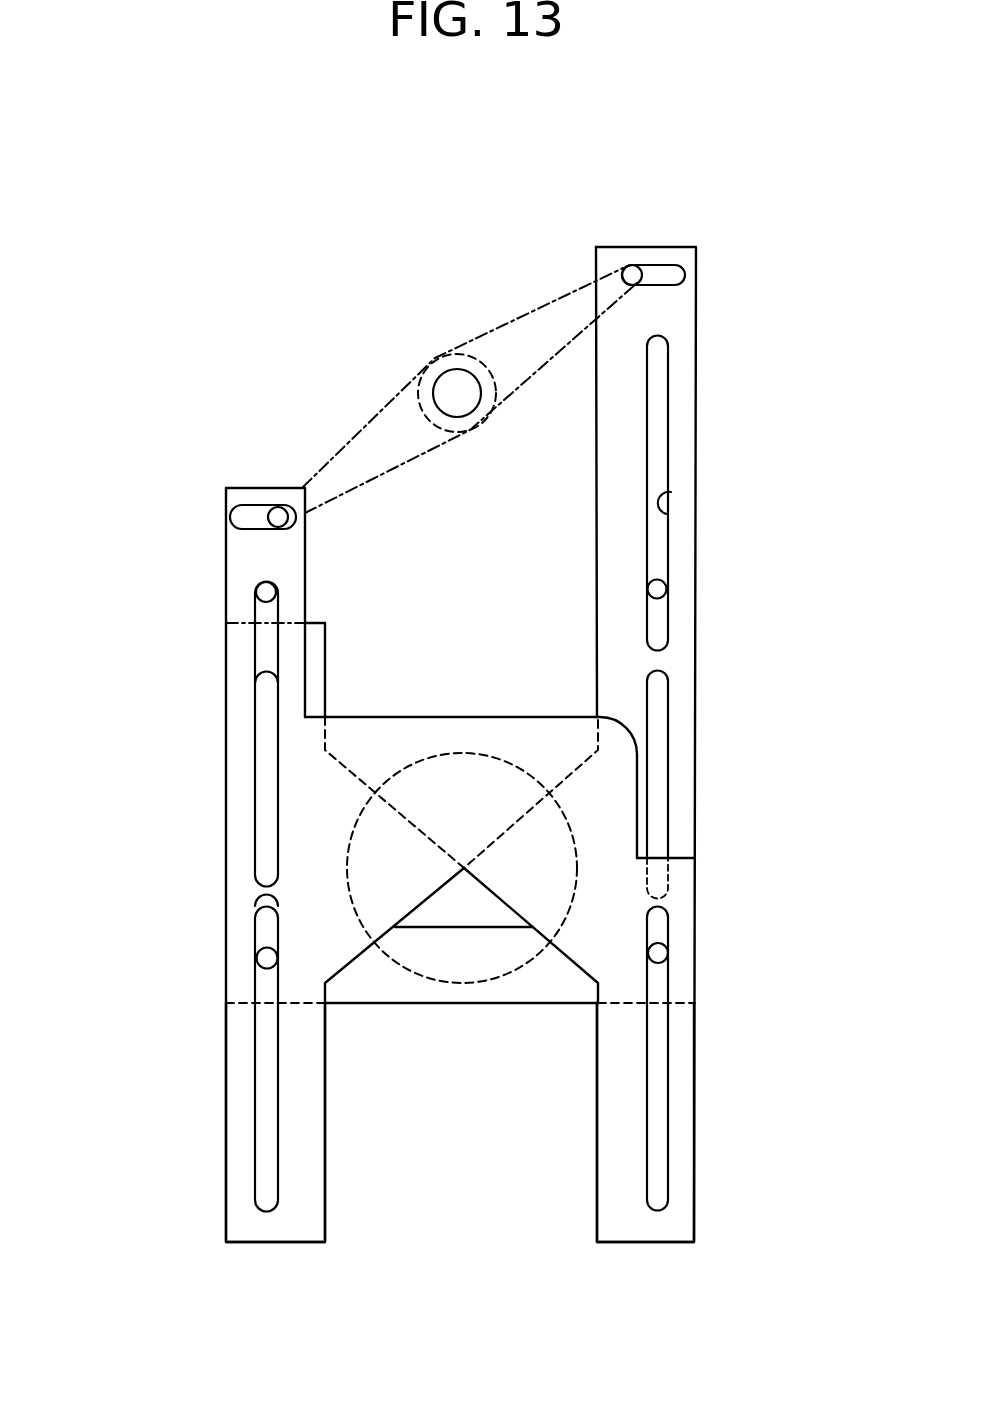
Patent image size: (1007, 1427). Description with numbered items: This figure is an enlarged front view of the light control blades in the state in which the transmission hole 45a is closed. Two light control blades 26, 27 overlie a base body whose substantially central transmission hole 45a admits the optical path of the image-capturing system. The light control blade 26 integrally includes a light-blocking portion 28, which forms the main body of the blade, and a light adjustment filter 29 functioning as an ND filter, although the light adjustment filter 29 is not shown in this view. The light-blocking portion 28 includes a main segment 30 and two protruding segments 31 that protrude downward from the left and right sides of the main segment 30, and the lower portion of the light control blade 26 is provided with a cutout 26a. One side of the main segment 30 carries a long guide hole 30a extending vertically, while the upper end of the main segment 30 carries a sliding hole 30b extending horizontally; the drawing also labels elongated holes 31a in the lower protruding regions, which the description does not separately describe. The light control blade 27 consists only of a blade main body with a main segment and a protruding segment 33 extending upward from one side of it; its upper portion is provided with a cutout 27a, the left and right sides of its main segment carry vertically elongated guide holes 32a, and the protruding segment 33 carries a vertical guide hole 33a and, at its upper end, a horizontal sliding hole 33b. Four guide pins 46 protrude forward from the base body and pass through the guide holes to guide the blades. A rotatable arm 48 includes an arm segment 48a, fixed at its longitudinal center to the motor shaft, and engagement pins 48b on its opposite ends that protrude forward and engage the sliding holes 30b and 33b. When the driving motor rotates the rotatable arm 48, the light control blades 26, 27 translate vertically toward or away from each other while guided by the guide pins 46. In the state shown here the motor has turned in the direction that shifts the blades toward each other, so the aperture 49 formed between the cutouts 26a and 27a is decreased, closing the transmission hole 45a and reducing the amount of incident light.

The light control blade 26 is at (226, 567).
The cutout 26a is at (577, 958).
The light control blade 27 is at (697, 433).
The cutout 27a is at (527, 813).
The light-blocking portion 28 is at (492, 727).
The light adjustment filter 29 is at (473, 913).
The main segment 30 is at (402, 737).
The guide hole 30a is at (258, 642).
The sliding hole 30b is at (245, 507).
The protruding segment 31 is at (235, 1138).
The lower slot 31a is at (257, 1062).
The guide hole 32a is at (257, 888).
The protruding segment 33 is at (687, 390).
The guide hole 33a is at (667, 514).
The sliding hole 33b is at (675, 285).
The transmission hole 45a is at (383, 950).
The guide pin 46 is at (256, 591).
The rotatable arm 48 is at (520, 318).
The arm segment 48a is at (570, 292).
The engagement pin 48b is at (268, 520).
The aperture 49 is at (464, 868).